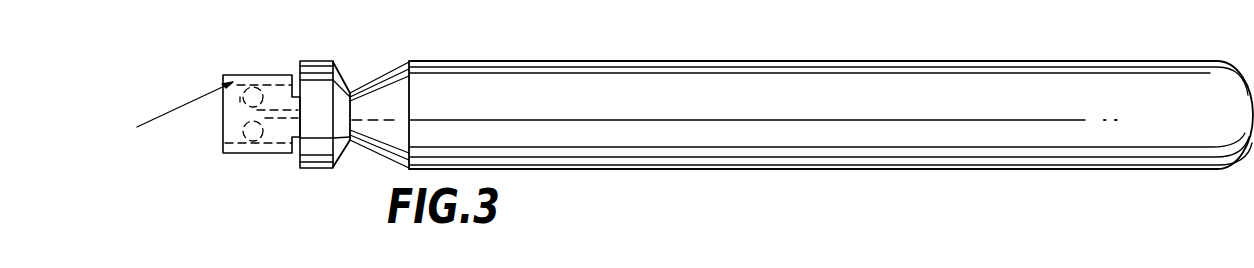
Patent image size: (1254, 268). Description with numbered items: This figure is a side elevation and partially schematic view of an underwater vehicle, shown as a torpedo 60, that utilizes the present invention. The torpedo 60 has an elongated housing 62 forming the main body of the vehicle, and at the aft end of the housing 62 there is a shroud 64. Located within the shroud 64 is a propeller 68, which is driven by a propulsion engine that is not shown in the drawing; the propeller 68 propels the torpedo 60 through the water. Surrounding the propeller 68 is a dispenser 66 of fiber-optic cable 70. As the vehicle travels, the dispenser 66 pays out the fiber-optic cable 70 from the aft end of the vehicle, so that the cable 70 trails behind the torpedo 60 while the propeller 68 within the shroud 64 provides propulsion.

The torpedo 60 is at (308, 192).
The housing 62 is at (652, 62).
The shroud 64 is at (243, 47).
The dispenser 66 is at (233, 156).
The propeller 68 is at (217, 115).
The fiber-optic cable 70 is at (193, 99).